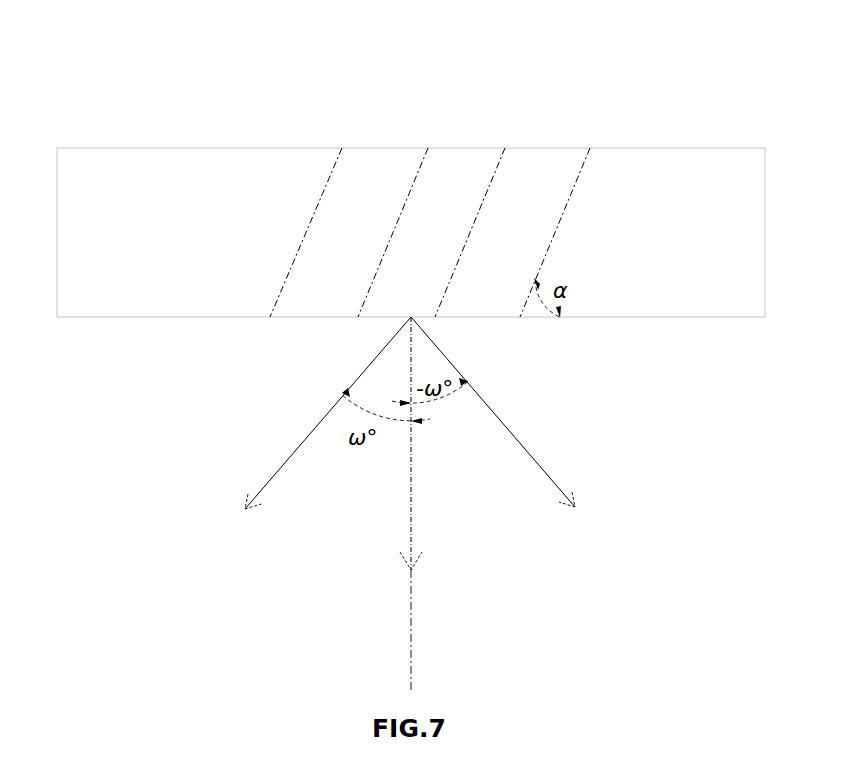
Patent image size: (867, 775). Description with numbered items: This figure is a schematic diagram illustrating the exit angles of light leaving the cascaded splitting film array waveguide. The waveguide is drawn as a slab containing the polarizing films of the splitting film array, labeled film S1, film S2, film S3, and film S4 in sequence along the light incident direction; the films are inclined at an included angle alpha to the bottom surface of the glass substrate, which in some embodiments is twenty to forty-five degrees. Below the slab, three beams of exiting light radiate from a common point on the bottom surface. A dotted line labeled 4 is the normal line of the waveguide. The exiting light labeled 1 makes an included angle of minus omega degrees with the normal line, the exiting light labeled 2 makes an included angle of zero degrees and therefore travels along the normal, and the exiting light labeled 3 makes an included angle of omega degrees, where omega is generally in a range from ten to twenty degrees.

The film S1 is at (554, 191).
The film S2 is at (468, 191).
The film S3 is at (392, 191).
The film S4 is at (304, 191).
The exiting light 1 is at (493, 412).
The exiting light 2 is at (416, 443).
The exiting light 3 is at (328, 413).
The normal line 4 is at (428, 631).